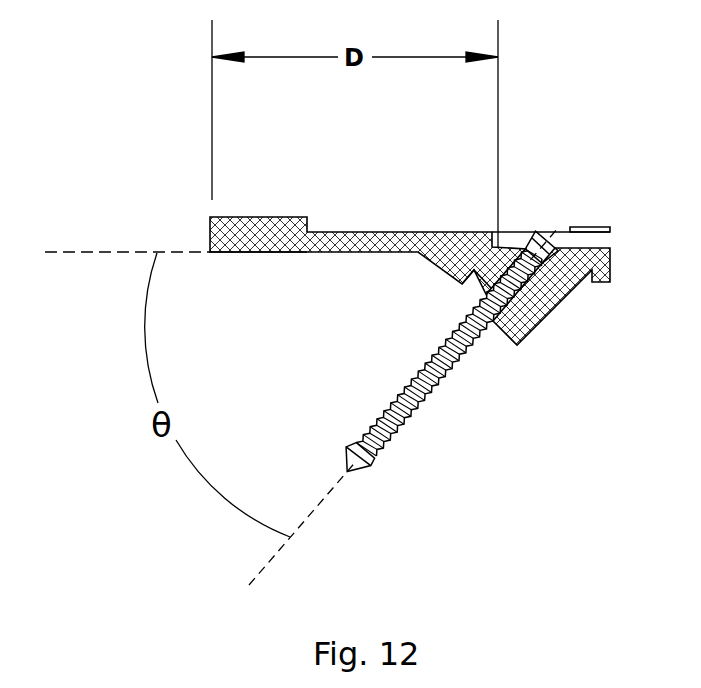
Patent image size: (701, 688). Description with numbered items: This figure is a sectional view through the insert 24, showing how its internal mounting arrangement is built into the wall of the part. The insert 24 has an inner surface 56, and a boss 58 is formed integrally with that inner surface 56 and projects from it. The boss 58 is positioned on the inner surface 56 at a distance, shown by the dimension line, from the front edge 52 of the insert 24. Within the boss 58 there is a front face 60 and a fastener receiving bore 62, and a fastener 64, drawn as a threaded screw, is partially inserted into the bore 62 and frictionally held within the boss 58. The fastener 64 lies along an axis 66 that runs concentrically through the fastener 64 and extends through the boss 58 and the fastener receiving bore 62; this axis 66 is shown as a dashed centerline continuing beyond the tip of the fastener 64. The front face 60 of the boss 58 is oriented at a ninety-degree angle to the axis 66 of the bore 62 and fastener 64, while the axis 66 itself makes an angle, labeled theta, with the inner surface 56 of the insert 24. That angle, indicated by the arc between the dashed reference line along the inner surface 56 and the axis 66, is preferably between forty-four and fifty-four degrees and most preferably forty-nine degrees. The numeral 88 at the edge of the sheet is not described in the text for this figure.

The insert 24 is at (202, 158).
The front edge 52 is at (210, 232).
The inner surface 56 is at (279, 254).
The boss 58 is at (548, 318).
The front face 60 is at (466, 279).
The fastener receiving bore 62 is at (540, 236).
The fastener 64 is at (354, 442).
The axis 66 is at (318, 506).
The adjacent component 88 is at (693, 571).